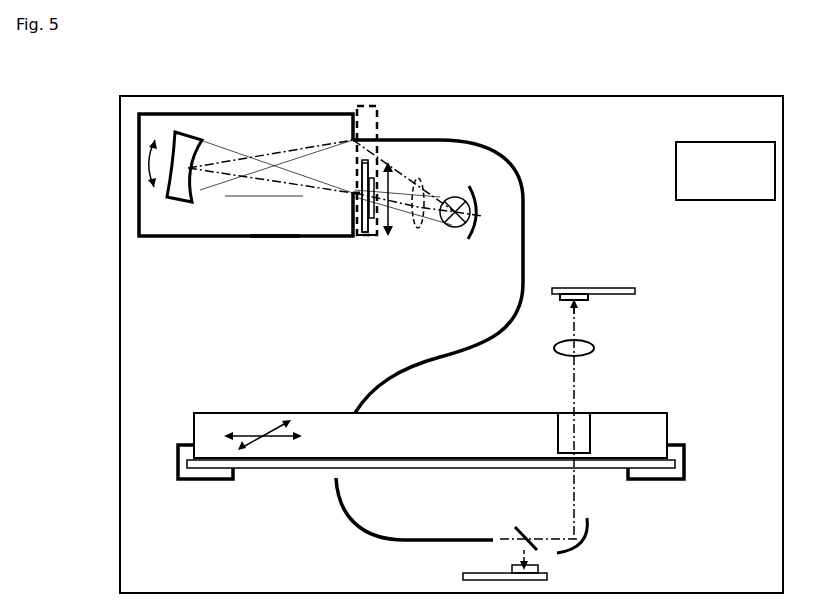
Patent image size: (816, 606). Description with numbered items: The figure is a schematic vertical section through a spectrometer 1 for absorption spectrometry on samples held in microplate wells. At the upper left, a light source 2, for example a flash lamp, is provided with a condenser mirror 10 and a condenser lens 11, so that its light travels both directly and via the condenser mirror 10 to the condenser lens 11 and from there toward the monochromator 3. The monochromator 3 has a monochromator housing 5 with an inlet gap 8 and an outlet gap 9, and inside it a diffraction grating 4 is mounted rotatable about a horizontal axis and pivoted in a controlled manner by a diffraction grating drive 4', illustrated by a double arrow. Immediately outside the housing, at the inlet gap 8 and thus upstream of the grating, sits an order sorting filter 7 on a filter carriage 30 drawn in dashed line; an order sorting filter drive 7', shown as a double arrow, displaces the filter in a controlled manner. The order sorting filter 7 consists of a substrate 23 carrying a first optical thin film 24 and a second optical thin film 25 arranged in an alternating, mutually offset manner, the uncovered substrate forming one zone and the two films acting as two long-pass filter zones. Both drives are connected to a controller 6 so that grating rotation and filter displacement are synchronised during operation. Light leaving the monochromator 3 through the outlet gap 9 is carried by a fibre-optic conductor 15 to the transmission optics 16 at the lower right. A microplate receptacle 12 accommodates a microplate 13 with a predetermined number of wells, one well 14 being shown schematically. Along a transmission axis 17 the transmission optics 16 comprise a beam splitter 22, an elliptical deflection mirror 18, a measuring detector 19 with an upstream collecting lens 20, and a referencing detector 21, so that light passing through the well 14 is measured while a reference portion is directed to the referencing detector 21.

The spectrometer 1 is at (733, 129).
The light source 2 is at (452, 254).
The monochromator 3 is at (206, 252).
The diffraction grating 4 is at (167, 220).
The diffraction grating drive 4' is at (115, 180).
The monochromator housing 5 is at (270, 239).
The controller 6 is at (733, 175).
The order sorting filter 7 is at (356, 235).
The order sorting filter drive 7' is at (377, 243).
The inlet gap 8 is at (358, 194).
The outlet gap 9 is at (355, 135).
The condenser mirror 10 is at (476, 247).
The condenser lens 11 is at (417, 232).
The microplate receptacle 12 is at (215, 482).
The microplate 13 is at (333, 428).
The well 14 is at (589, 416).
The fibre-optic conductor 15 is at (525, 265).
The transmission optics 16 is at (628, 379).
The transmission axis 17 is at (577, 512).
The elliptical deflection mirror 18 is at (584, 540).
The measuring detector 19 is at (597, 301).
The collecting lens 20 is at (558, 349).
The referencing detector 21 is at (486, 563).
The beam splitter 22 is at (515, 524).
The substrate 23 is at (364, 130).
The first optical thin film 24 is at (386, 150).
The second optical thin film 25 is at (358, 130).
The filter carriage 30 is at (356, 238).